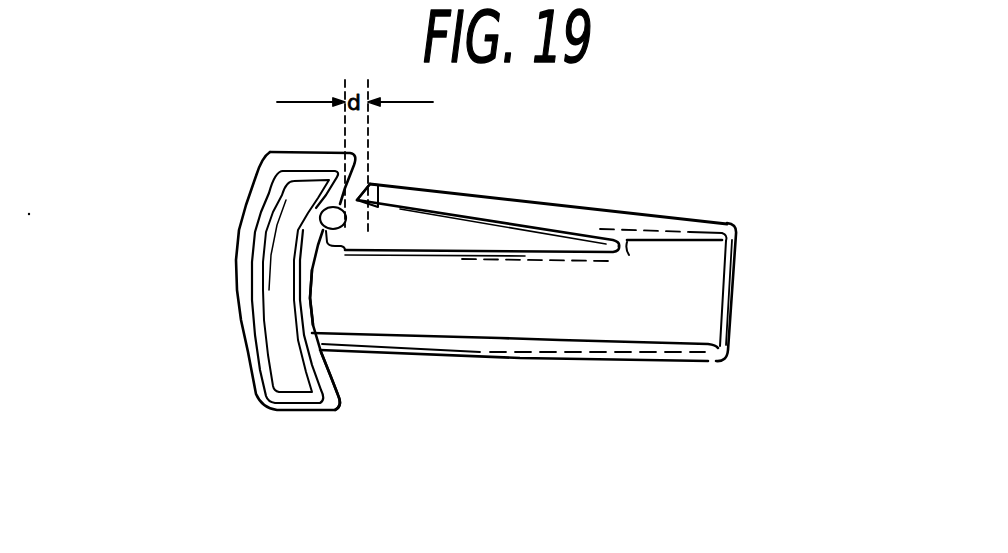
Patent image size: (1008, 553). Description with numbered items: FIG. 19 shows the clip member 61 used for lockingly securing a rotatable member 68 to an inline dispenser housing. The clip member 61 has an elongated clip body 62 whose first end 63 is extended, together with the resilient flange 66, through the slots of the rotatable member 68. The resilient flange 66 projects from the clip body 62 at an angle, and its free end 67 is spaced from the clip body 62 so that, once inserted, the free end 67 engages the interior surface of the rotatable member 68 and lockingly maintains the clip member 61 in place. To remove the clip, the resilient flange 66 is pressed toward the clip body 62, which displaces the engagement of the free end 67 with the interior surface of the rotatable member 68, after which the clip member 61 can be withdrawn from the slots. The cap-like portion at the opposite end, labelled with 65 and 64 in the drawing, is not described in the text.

The clip member 61 is at (652, 111).
The clip body 62 is at (484, 332).
The first end of the clip body 63 is at (735, 298).
The cap rear wall 64 is at (311, 296).
The cap 65 is at (267, 338).
The resilient flange 66 is at (542, 212).
The free end of the resilient flange 67 is at (358, 198).
The rotatable member 68 is at (335, 378).